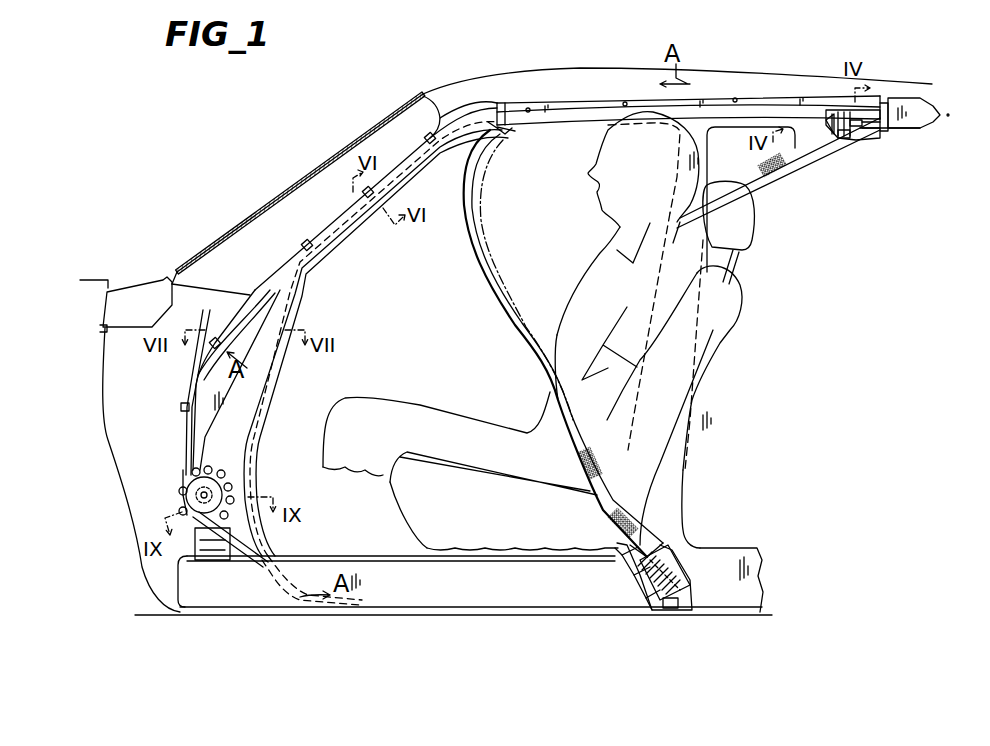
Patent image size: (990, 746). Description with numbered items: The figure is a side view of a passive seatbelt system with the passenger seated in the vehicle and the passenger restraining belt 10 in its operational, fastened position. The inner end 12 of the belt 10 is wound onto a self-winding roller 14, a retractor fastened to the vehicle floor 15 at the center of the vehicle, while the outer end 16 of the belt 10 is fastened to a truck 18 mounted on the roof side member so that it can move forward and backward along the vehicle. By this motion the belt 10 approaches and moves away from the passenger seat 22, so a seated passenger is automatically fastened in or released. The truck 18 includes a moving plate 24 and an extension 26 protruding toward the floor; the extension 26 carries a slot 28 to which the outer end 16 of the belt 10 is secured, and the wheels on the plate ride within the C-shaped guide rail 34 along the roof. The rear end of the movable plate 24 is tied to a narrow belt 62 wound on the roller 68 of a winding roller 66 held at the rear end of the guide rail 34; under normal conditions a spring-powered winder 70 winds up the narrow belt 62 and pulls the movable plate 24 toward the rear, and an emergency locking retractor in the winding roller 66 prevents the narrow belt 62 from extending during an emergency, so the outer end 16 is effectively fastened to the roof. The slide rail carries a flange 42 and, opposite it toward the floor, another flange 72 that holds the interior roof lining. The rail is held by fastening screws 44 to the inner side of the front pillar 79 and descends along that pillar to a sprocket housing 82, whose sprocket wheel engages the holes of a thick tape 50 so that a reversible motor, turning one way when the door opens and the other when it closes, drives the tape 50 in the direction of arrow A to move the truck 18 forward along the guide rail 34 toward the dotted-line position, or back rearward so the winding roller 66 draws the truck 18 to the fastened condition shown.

The passenger restraining belt 10 is at (505, 287).
The inner end of the belt 12 is at (643, 550).
The self-winding roller 14 is at (694, 558).
The vehicle floor 15 is at (487, 607).
The outer end of the belt 16 is at (497, 142).
The truck 18 is at (524, 138).
The passenger seat 22 is at (612, 428).
The moving plate 24 is at (855, 124).
The extension 26 is at (843, 136).
The slot 28 is at (830, 140).
The guide rail 34 is at (745, 150).
The flange 42 is at (428, 135).
The fastening screws 44 is at (557, 103).
The thick tape 50 is at (282, 573).
The narrow belt 62 is at (884, 130).
The winding roller 66 is at (908, 102).
The roller 68 is at (658, 610).
The spring-powered winder 70 is at (628, 586).
The flange 72 is at (745, 128).
The front pillar 79 is at (248, 414).
The sprocket housing 82 is at (220, 492).